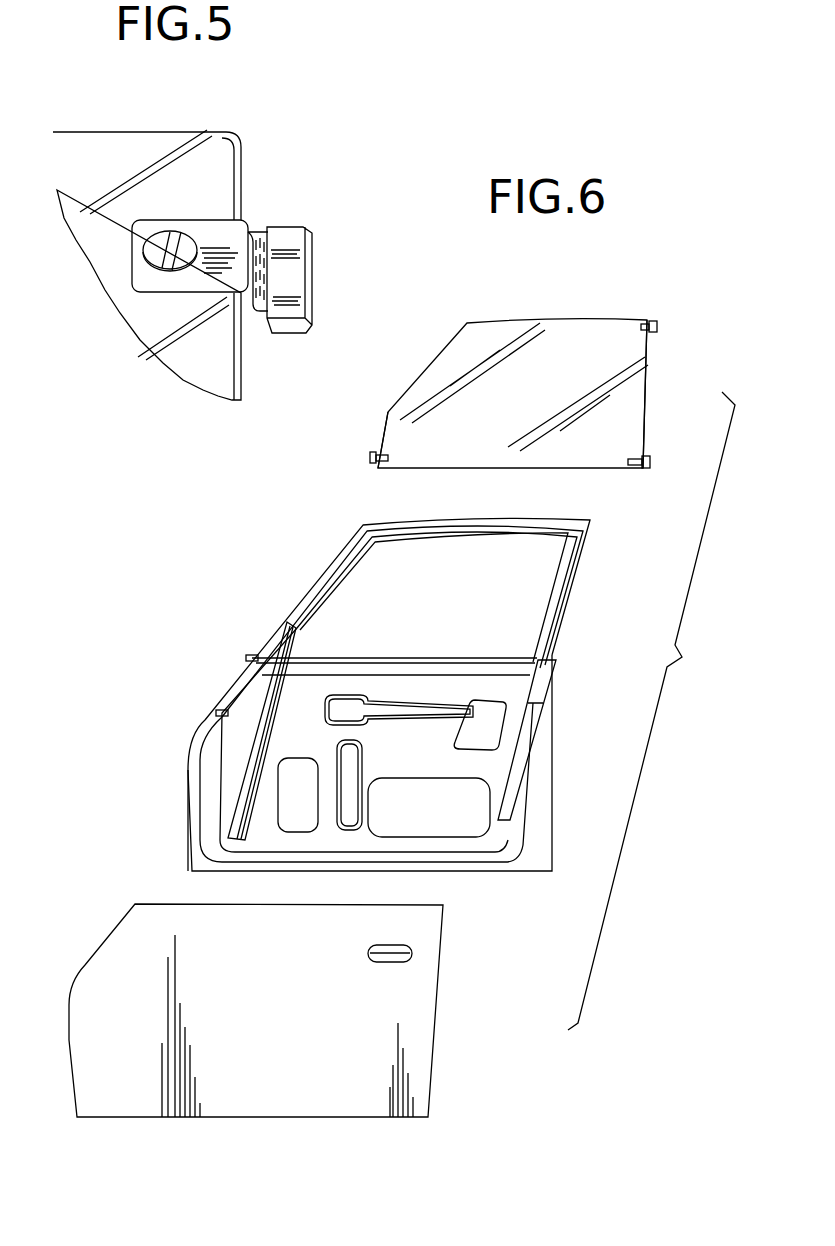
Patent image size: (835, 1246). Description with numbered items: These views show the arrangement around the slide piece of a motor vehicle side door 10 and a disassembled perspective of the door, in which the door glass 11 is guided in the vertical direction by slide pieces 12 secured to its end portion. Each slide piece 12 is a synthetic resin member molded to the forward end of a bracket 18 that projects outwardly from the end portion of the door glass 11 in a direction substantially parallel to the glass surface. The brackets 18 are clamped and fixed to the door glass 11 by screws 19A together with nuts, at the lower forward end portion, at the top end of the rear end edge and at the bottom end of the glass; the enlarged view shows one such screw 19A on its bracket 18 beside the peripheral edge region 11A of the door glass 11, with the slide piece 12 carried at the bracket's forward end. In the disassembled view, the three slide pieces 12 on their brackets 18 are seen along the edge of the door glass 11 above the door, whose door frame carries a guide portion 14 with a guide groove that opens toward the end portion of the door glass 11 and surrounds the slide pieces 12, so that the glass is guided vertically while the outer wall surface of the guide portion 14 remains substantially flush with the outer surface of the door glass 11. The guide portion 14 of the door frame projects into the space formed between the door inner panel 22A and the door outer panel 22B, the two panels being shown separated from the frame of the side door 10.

In FIG. 6, the side door 10 is at (213, 661).
In FIG. 5, the door glass 11 is at (213, 152).
In FIG. 6, the door glass 11 is at (547, 321).
In FIG. 5, the peripheral edge of glass 11A is at (220, 178).
In FIG. 6, the peripheral edge of glass 11A is at (648, 388).
In FIG. 5, the slide piece 12 is at (292, 237).
In FIG. 6, the slide piece 12 is at (658, 328).
In FIG. 6, the guide portion 14 is at (238, 797).
In FIG. 5, the bracket 18 is at (265, 237).
In FIG. 6, the bracket 18 is at (645, 321).
In FIG. 5, the screw 19A is at (150, 248).
In FIG. 6, the door inner panel 22A is at (540, 738).
In FIG. 6, the door outer panel 22B is at (435, 1015).